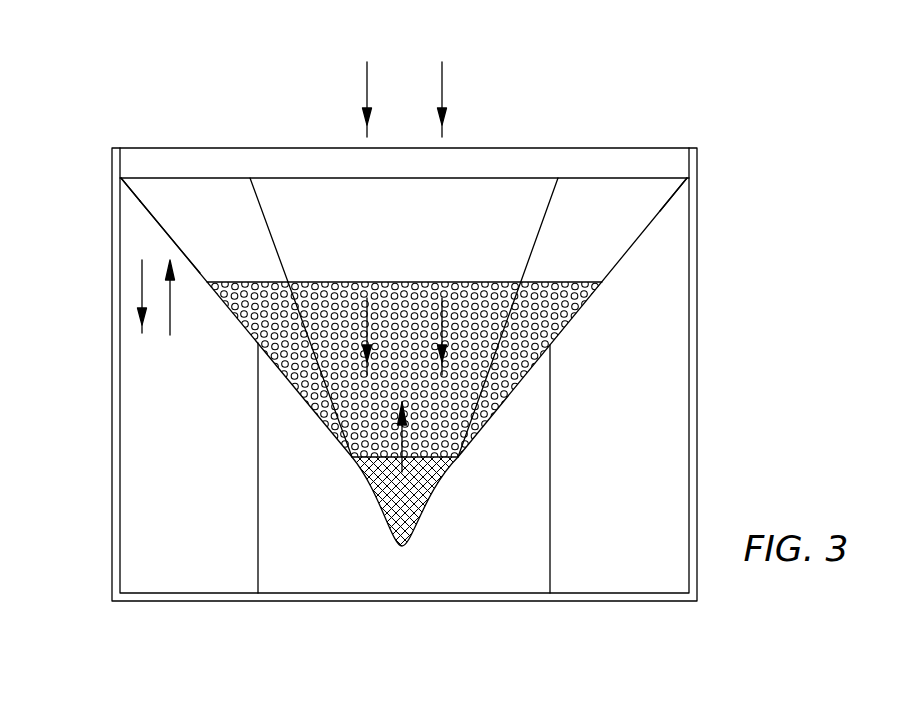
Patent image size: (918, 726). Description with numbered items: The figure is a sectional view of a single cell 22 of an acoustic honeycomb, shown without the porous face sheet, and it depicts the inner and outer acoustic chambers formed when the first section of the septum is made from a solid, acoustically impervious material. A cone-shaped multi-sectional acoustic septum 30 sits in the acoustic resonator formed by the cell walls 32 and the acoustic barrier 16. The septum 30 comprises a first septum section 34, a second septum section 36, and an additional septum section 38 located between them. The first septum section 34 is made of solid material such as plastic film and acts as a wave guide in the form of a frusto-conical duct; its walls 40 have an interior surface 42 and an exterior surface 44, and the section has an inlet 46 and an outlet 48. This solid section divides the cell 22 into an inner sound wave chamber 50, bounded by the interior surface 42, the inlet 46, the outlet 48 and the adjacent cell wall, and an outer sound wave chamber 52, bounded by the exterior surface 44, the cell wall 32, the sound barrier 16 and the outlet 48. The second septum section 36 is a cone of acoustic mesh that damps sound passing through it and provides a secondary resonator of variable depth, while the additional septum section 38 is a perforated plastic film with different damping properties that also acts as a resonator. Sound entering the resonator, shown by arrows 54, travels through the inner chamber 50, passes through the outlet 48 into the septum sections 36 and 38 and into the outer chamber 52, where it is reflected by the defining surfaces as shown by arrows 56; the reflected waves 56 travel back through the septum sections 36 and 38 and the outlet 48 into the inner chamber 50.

The acoustic barrier 16 is at (694, 600).
The cell 22 is at (682, 115).
The cone-shaped multi-sectional acoustic septum 30 is at (632, 227).
The cell wall 32 is at (693, 357).
The first septum section 34 is at (183, 203).
The second septum section 36 is at (432, 512).
The additional septum section 38 is at (468, 343).
The walls 40 is at (160, 230).
The interior surface 42 is at (122, 183).
The exterior surface 44 is at (675, 193).
The inlet 46 is at (396, 178).
The outlet 48 is at (307, 280).
The inner sound wave chamber 50 is at (402, 204).
The outer sound wave chamber 52 is at (174, 569).
The sound waves entering the resonator 54 is at (366, 95).
The reflected sound waves 56 is at (140, 294).